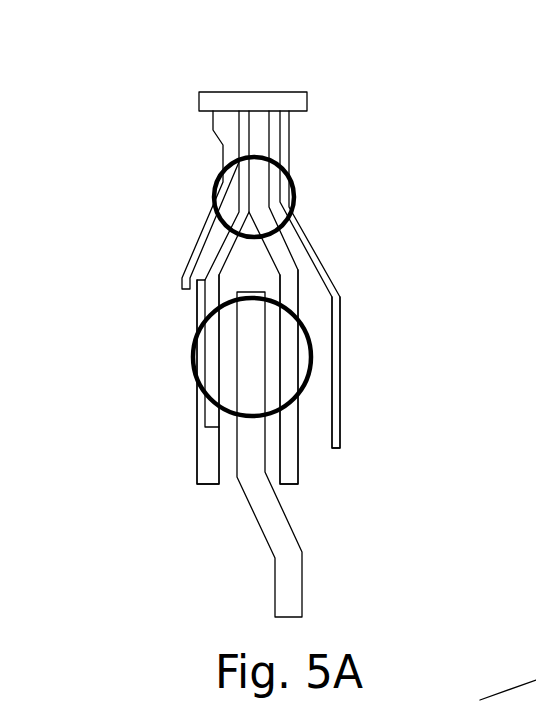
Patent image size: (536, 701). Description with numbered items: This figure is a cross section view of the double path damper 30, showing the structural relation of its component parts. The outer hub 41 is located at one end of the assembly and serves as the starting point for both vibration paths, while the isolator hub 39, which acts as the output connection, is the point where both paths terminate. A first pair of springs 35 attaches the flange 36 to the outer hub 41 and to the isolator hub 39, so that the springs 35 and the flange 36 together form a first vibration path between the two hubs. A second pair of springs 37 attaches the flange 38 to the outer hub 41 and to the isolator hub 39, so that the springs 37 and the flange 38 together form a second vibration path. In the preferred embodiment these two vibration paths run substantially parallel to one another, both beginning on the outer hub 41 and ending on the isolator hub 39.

The double path damper 30 is at (134, 140).
The springs 35 is at (292, 181).
The flange 36 is at (207, 449).
The springs 37 is at (193, 356).
The flange 38 is at (300, 470).
The isolator hub 39 is at (302, 585).
The outer hub 41 is at (260, 100).